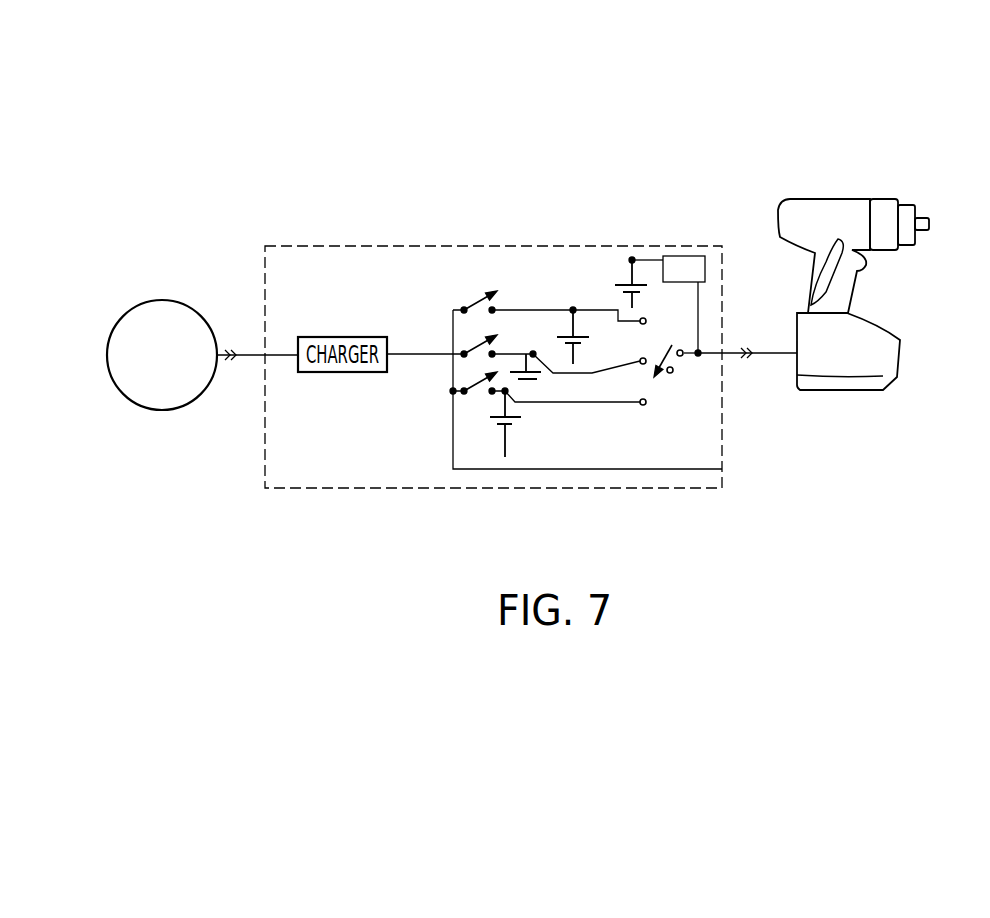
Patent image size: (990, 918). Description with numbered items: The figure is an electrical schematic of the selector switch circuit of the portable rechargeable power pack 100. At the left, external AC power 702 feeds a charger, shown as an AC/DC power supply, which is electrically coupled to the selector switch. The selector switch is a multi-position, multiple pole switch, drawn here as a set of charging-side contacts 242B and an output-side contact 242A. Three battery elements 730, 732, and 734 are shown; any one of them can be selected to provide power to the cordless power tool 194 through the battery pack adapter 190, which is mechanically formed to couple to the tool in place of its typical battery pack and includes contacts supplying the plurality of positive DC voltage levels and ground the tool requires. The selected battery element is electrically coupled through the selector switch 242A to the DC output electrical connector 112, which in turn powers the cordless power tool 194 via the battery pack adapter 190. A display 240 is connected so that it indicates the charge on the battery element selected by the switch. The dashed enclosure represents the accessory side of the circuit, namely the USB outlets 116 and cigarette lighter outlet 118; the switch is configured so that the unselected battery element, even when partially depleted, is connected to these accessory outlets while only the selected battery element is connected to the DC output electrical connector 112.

The portable rechargeable power pack 100 is at (646, 60).
The AC power 702 is at (160, 300).
The selector switch 242B is at (480, 300).
The battery element 734 is at (585, 338).
The battery element 732 is at (538, 378).
The battery element 730 is at (527, 419).
The display 240 is at (688, 255).
The selector switch 242A is at (674, 361).
The DC output electrical connector 112 is at (724, 355).
The USB outlets 116 is at (722, 469).
The cigarette lighter outlet 118 is at (586, 389).
The cordless power tool 194 is at (838, 199).
The battery pack adapter 190 is at (892, 353).